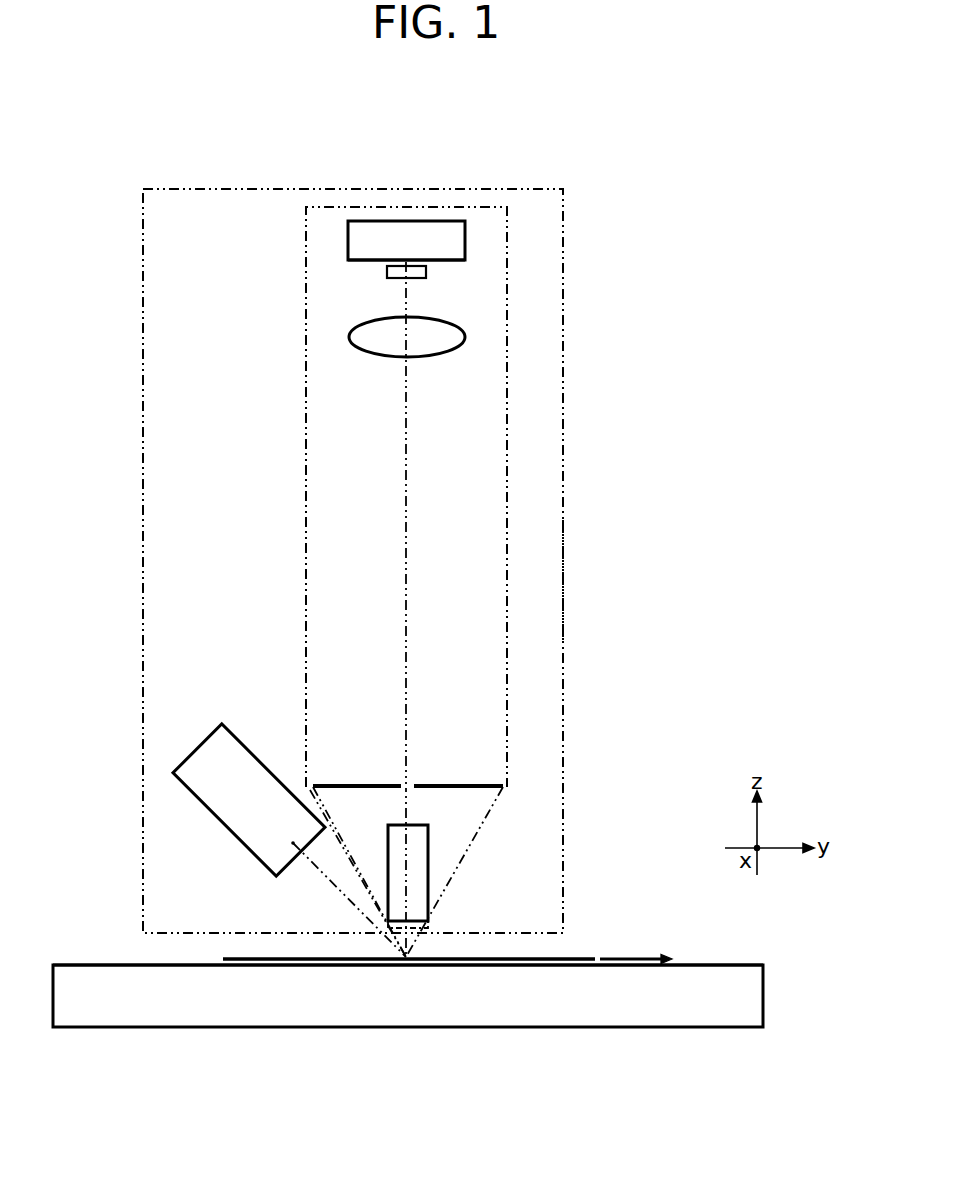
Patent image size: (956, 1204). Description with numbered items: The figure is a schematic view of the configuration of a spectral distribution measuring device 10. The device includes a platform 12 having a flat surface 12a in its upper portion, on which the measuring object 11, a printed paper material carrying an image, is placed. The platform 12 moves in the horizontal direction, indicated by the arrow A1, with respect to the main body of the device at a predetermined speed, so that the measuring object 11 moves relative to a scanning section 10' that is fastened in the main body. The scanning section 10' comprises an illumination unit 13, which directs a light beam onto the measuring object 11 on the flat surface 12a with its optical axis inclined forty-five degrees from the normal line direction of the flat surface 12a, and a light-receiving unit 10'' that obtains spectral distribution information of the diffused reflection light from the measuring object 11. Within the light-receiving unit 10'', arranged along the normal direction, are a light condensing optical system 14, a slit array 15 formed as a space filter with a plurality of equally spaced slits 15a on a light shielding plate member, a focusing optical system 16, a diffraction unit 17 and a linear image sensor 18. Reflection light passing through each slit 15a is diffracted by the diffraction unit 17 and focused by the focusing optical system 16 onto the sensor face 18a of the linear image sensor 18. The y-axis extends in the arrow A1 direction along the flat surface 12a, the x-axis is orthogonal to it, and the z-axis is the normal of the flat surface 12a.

The spectral distribution measuring device 10 is at (446, 561).
The scanning section 10' is at (601, 580).
The light-receiving unit 10'' is at (487, 497).
The measuring object 11 is at (536, 958).
The platform 12 is at (709, 1015).
The flat surface 12a is at (707, 962).
The illumination unit 13 is at (240, 740).
The light condensing optical system 14 is at (430, 920).
The slit array 15 is at (494, 767).
The slit 15a is at (414, 786).
The focusing optical system 16 is at (469, 353).
The diffraction unit 17 is at (434, 288).
The linear image sensor 18 is at (470, 214).
The sensor face 18a is at (358, 262).
The arrow A1 direction A1 is at (626, 958).